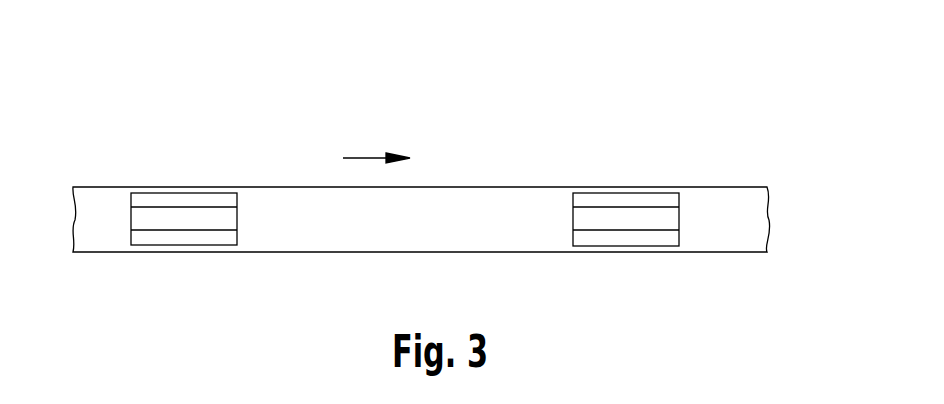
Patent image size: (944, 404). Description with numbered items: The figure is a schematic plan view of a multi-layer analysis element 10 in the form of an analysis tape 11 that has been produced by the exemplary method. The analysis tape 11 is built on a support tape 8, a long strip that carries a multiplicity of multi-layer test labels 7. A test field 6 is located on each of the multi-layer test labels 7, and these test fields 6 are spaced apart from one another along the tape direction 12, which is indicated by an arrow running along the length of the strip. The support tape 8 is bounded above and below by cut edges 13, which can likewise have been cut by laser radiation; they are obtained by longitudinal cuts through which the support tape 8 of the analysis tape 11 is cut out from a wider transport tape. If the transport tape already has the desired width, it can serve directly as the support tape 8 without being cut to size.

The multi-layer analysis element 10 is at (130, 143).
The analysis tape 11 is at (421, 211).
The test field 6 is at (220, 218).
The multi-layer test label 7 is at (172, 200).
The support tape 8 is at (731, 212).
The tape direction 12 is at (365, 158).
The cut edge 13 is at (540, 187).